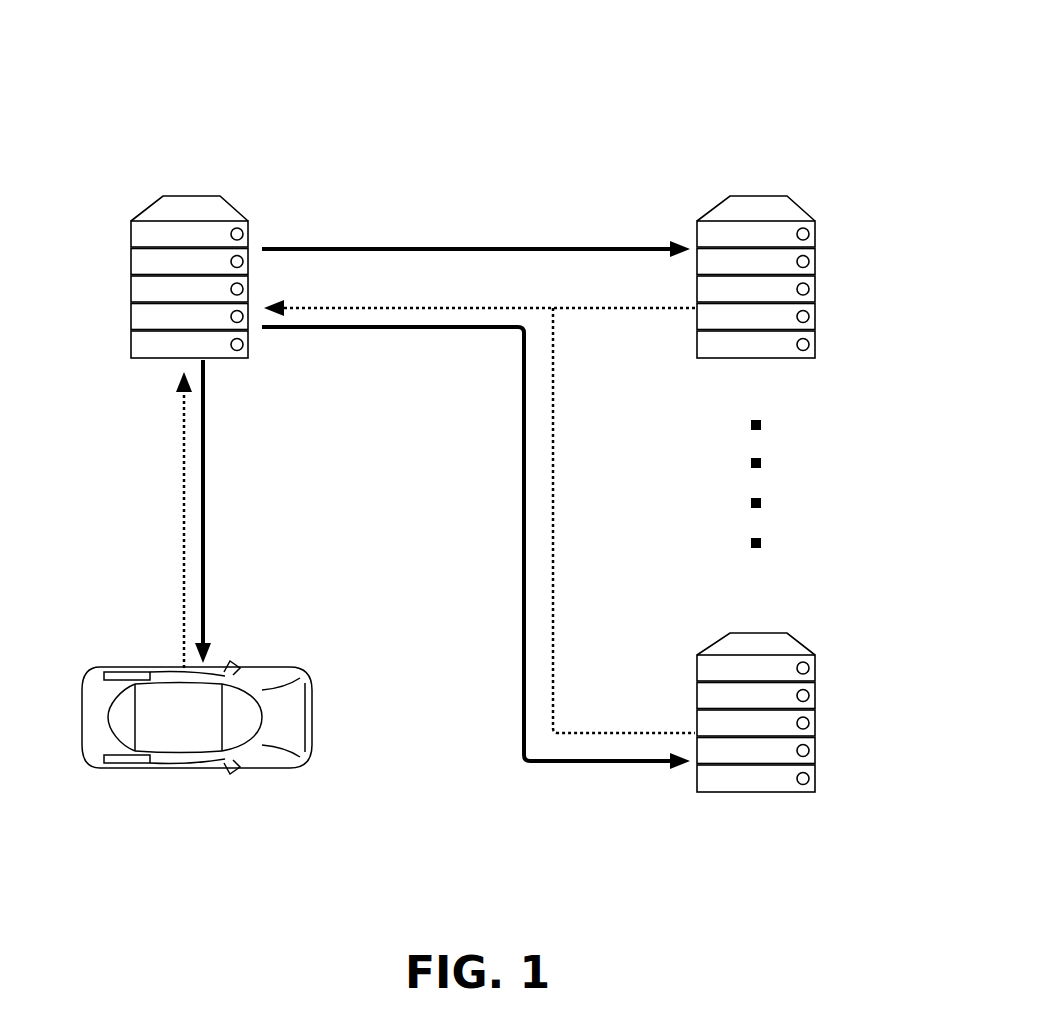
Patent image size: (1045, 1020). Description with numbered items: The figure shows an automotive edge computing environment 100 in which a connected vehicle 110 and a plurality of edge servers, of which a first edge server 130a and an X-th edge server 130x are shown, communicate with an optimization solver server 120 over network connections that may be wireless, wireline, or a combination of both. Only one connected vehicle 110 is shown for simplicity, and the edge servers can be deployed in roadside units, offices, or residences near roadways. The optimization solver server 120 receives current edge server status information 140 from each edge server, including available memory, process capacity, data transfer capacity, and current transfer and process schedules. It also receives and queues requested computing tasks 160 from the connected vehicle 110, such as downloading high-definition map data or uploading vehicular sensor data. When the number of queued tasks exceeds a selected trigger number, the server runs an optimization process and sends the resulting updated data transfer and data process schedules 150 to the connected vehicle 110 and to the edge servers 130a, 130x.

The automotive edge computing environment 100 is at (538, 86).
The connected vehicle 110 is at (312, 720).
The optimization solver server 120 is at (131, 295).
The Edge Server X 130x is at (815, 295).
The Edge Server 1 130a is at (815, 700).
The edge server status information 140 is at (557, 468).
The schedules 150 is at (356, 249).
The requested computing tasks 160 is at (180, 570).